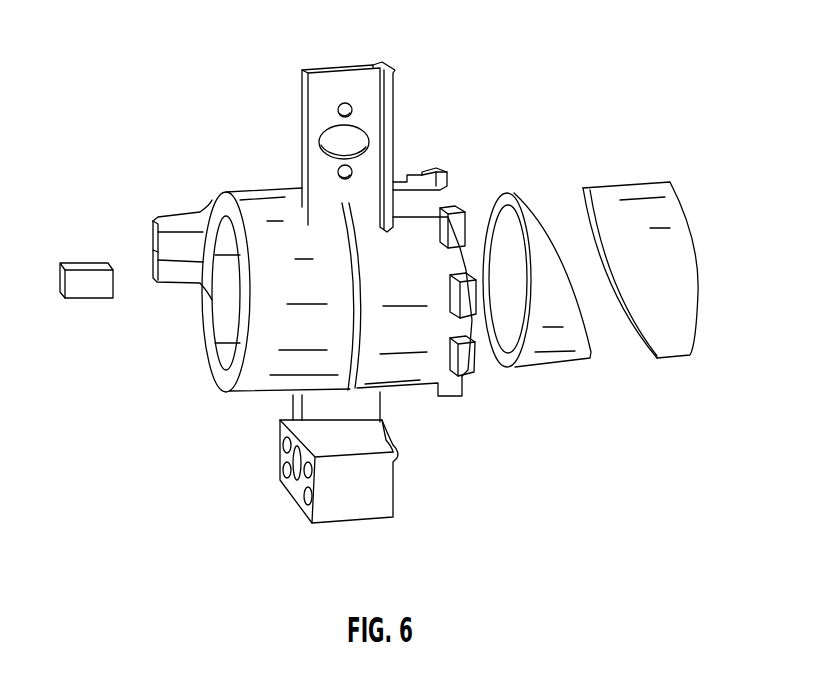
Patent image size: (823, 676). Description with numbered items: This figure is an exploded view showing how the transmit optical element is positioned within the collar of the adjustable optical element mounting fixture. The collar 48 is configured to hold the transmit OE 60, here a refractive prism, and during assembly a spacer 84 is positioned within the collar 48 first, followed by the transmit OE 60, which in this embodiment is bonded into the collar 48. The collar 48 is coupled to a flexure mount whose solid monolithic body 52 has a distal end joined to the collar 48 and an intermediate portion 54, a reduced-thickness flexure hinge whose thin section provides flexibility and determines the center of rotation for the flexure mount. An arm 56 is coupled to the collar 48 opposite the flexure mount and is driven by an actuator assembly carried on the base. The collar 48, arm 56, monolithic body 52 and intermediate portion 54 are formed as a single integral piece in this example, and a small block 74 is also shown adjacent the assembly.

The collar 48 is at (212, 368).
The solid monolithic body 52 is at (393, 513).
The intermediate portion 54 is at (293, 407).
The arm 56 is at (390, 70).
The transmit OE 60 is at (668, 182).
The insert block 74 is at (63, 300).
The spacer 84 is at (516, 192).